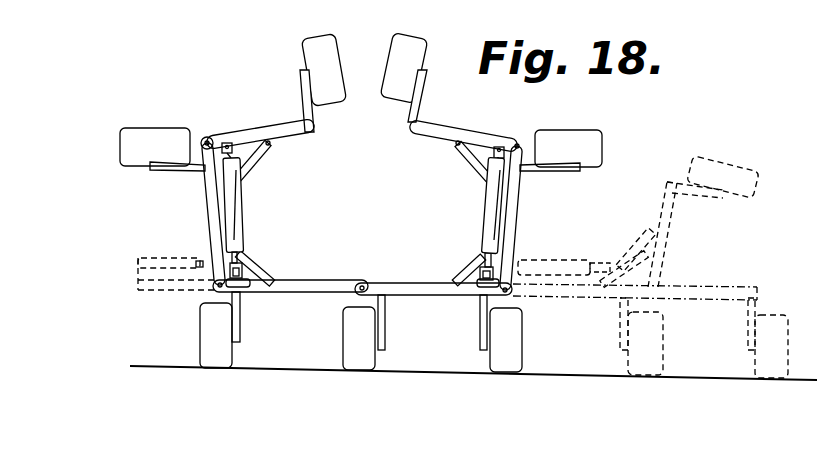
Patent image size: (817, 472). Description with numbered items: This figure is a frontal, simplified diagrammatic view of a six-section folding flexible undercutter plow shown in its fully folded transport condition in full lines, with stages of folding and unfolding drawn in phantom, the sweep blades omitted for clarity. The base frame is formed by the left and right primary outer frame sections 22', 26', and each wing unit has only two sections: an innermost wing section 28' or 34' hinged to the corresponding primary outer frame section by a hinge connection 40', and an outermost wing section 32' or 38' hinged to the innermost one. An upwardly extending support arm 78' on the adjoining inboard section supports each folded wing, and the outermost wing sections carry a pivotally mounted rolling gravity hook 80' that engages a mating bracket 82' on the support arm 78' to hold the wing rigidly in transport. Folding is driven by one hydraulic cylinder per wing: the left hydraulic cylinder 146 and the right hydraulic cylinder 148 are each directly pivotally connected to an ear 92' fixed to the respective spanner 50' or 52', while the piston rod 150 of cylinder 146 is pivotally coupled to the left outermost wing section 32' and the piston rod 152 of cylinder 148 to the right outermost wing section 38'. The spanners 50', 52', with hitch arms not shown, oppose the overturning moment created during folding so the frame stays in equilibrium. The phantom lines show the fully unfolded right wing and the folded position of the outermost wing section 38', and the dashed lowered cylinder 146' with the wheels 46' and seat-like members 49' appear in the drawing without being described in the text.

The primary outer frame section 22' is at (362, 302).
The primary outer frame section 26' is at (400, 322).
The innermost wing section 28' is at (181, 231).
The left outermost wing section 32' is at (258, 124).
The innermost wing section 34' is at (550, 235).
The right outermost wing section 38' is at (583, 202).
The hinge connection 40' is at (371, 265).
The wheel 46' is at (500, 205).
The seat support 49' is at (425, 179).
The spanner 50' is at (256, 318).
The spanner 52' is at (465, 322).
The support arm 78' is at (360, 213).
The rolling gravity hook 80' is at (356, 131).
The bracket 82' is at (371, 136).
The ear 92' is at (362, 261).
The left hydraulic cylinder 146 is at (165, 248).
The hydraulic cylinder 146' is at (254, 205).
The right hydraulic cylinder 148 is at (488, 220).
The piston rod 150 is at (204, 150).
The piston rod 152 is at (480, 160).